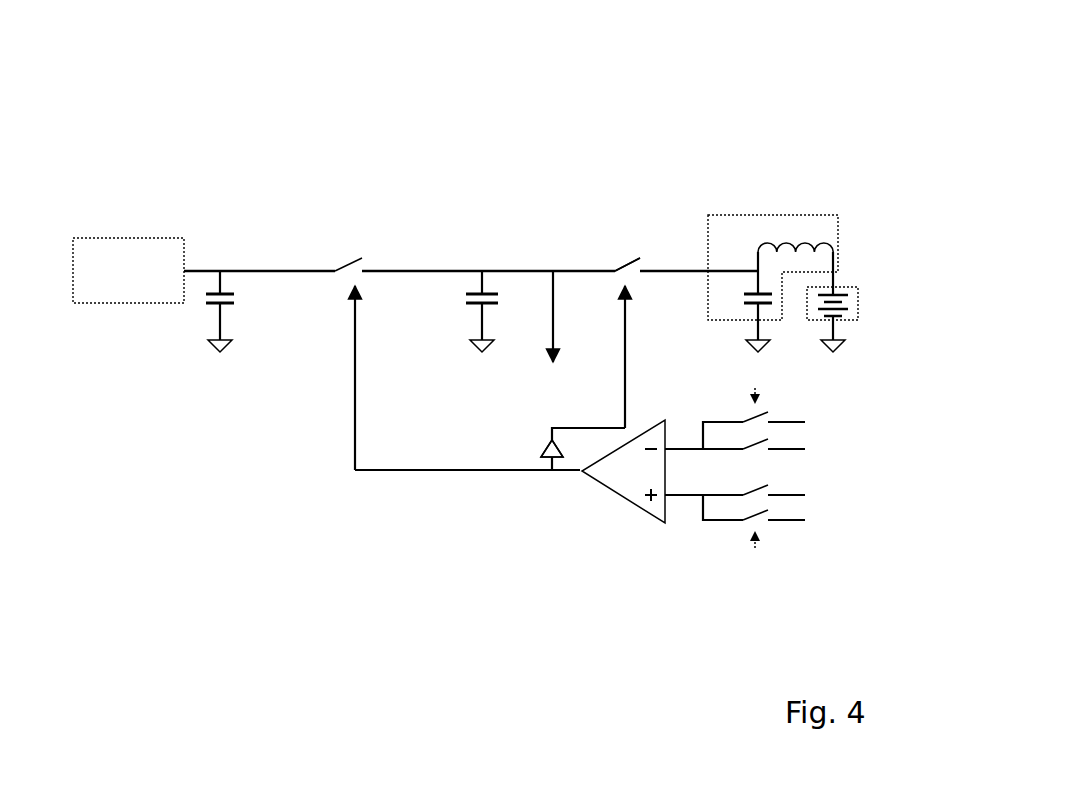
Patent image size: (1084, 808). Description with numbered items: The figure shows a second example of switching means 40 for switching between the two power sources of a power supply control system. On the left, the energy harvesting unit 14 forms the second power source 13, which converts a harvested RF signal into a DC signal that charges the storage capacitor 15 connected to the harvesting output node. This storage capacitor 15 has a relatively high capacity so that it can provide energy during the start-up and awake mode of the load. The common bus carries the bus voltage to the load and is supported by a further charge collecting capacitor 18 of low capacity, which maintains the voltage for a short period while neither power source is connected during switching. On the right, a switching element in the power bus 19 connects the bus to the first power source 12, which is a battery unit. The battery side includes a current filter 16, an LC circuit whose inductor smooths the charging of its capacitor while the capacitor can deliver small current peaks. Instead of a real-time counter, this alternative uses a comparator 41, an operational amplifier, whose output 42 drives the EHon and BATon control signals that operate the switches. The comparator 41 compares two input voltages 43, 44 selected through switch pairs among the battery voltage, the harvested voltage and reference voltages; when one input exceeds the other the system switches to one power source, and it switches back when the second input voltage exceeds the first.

The power management system 40 is at (228, 128).
The energy harvesting unit 14 is at (165, 240).
The second power source 13 is at (128, 330).
The storage capacitor 15 is at (215, 318).
The charge collecting unit 18 is at (478, 313).
The power bus 19 is at (700, 270).
The current filter 16 is at (715, 213).
The first power source 12 is at (860, 195).
The comparator 41 is at (627, 500).
The comparator output feedback 42 is at (547, 433).
The first input voltage 43 is at (870, 423).
The second input voltage 44 is at (872, 495).